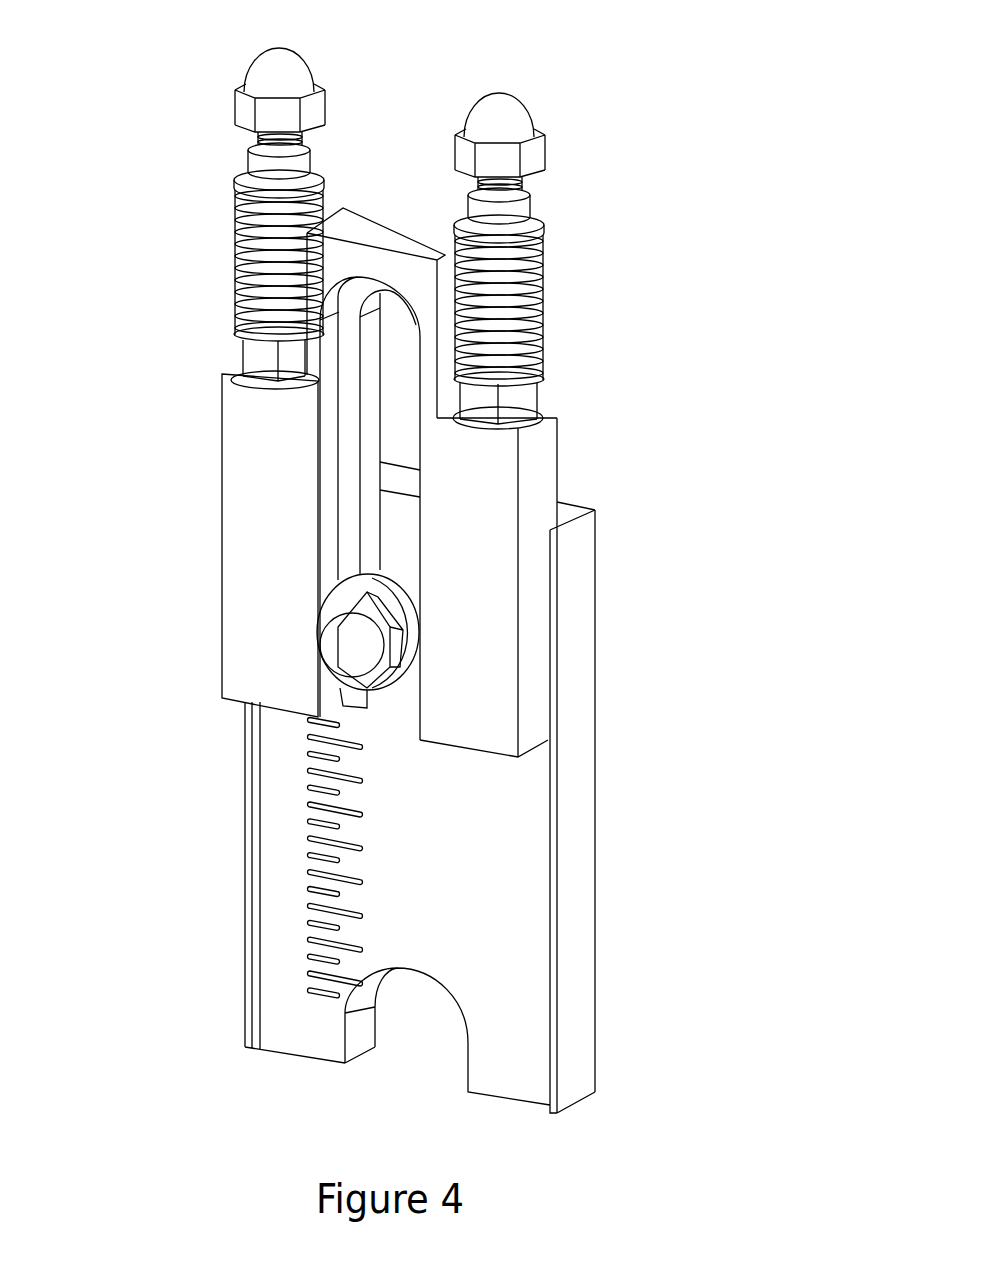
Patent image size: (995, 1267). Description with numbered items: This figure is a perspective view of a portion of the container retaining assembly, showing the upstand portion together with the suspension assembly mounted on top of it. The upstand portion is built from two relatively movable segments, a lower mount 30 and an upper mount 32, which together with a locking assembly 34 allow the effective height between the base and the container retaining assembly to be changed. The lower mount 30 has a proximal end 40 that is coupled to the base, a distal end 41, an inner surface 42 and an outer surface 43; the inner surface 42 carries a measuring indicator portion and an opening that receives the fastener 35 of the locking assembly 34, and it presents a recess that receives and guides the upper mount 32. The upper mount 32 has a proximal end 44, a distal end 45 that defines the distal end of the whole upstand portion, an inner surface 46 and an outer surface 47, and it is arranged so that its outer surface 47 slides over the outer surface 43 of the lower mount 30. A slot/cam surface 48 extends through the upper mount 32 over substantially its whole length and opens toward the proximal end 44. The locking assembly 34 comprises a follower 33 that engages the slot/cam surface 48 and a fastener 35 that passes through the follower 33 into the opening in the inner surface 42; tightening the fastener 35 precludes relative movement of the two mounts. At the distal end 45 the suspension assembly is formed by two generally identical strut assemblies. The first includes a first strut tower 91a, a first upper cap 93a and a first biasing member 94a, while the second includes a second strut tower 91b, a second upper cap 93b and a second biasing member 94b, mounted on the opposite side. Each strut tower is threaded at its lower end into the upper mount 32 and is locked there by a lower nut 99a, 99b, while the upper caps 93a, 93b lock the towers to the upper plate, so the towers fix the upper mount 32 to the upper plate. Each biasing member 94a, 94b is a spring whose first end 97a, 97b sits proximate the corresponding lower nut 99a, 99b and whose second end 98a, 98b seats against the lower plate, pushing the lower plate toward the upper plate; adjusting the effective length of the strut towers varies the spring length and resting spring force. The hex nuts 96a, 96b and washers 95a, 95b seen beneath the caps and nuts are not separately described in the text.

The lower mount 30 is at (150, 977).
The upper mount 32 is at (183, 543).
The follower 33 is at (420, 653).
The locking assembly 34 is at (335, 675).
The fastener 35 is at (387, 668).
The proximal end 40 is at (233, 1037).
The distal end 41 is at (592, 560).
The inner surface 42 is at (523, 843).
The outer surface 43 is at (597, 968).
The proximal end 44 is at (197, 662).
The distal end 45 is at (178, 332).
The inner surface 46 is at (230, 690).
The outer surface 47 is at (553, 468).
The slot/cam surface 48 is at (335, 474).
The first strut tower 91a is at (531, 197).
The second strut tower 91b is at (249, 166).
The first upper cap 93a is at (523, 104).
The second upper cap 93b is at (240, 90).
The first biasing member 94a is at (541, 292).
The second biasing member 94b is at (236, 258).
The washer 95a is at (553, 416).
The washer 95b is at (230, 379).
The hex nut 96a is at (562, 152).
The hex nut 96b is at (232, 138).
The first end 97a is at (544, 370).
The first end 97b is at (232, 328).
The second end 98a is at (546, 223).
The second end 98b is at (236, 181).
The lower nut 99a is at (540, 400).
The lower nut 99b is at (243, 352).